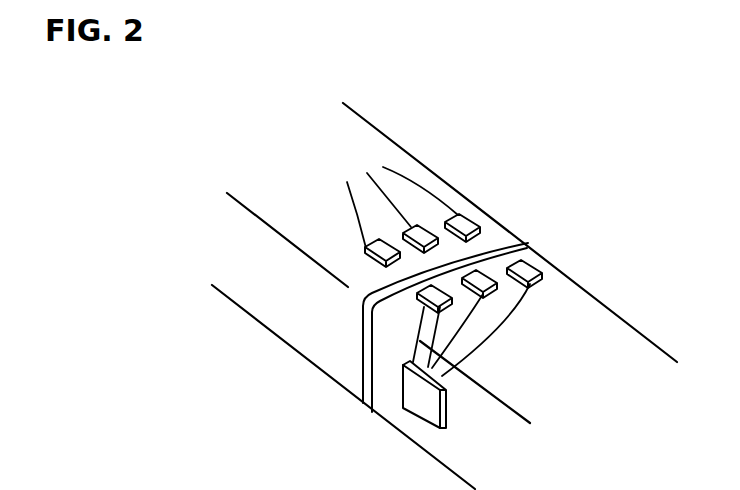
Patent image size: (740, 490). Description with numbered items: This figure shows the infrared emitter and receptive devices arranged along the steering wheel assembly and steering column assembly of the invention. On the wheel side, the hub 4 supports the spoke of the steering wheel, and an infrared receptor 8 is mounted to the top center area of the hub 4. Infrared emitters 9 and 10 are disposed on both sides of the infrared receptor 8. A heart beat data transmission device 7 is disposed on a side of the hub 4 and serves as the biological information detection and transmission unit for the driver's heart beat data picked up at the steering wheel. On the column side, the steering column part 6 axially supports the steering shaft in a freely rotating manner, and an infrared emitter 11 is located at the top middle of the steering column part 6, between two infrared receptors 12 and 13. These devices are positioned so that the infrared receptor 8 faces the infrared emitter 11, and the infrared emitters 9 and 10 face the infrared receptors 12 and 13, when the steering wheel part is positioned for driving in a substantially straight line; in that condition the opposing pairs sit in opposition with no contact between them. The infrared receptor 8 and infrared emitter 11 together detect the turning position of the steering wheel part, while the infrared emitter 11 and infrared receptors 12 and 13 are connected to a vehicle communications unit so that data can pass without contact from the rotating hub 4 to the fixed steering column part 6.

The hub 4 is at (588, 320).
The steering column part 6 is at (404, 167).
The heart beat data transmission device 7 is at (422, 403).
The infrared receptor 8 is at (479, 271).
The infrared emitter 9 is at (538, 264).
The infrared emitter 10 is at (421, 303).
The infrared emitter 11 is at (418, 226).
The infrared receptor 12 is at (461, 214).
The infrared receptor 13 is at (364, 248).